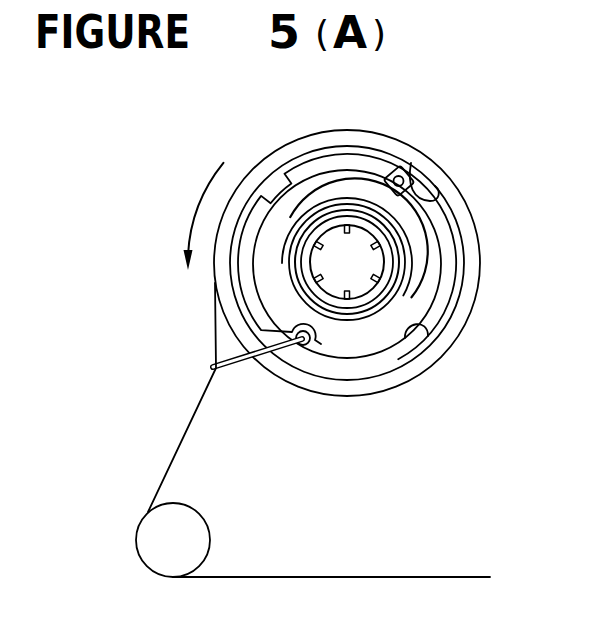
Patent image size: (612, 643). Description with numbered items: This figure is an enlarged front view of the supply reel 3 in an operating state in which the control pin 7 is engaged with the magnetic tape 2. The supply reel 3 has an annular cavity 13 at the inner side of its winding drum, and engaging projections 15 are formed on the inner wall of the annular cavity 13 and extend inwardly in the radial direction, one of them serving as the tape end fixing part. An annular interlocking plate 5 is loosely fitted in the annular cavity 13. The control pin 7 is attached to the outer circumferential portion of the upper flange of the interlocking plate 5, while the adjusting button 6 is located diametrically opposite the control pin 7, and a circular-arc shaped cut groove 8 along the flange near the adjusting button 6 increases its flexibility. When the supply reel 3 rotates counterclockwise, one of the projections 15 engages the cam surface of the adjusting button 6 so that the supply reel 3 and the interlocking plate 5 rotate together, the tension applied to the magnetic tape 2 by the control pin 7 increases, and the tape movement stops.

The magnetic tape 2 is at (178, 450).
The supply reel 3 is at (423, 357).
The annular interlocking plate 5 is at (355, 343).
The adjusting button 6 is at (404, 163).
The control pin 7 is at (240, 372).
The circular-arc shaped cut groove 8 is at (343, 190).
The annular cavity 13 is at (298, 172).
The engaging projections 15 is at (422, 188).